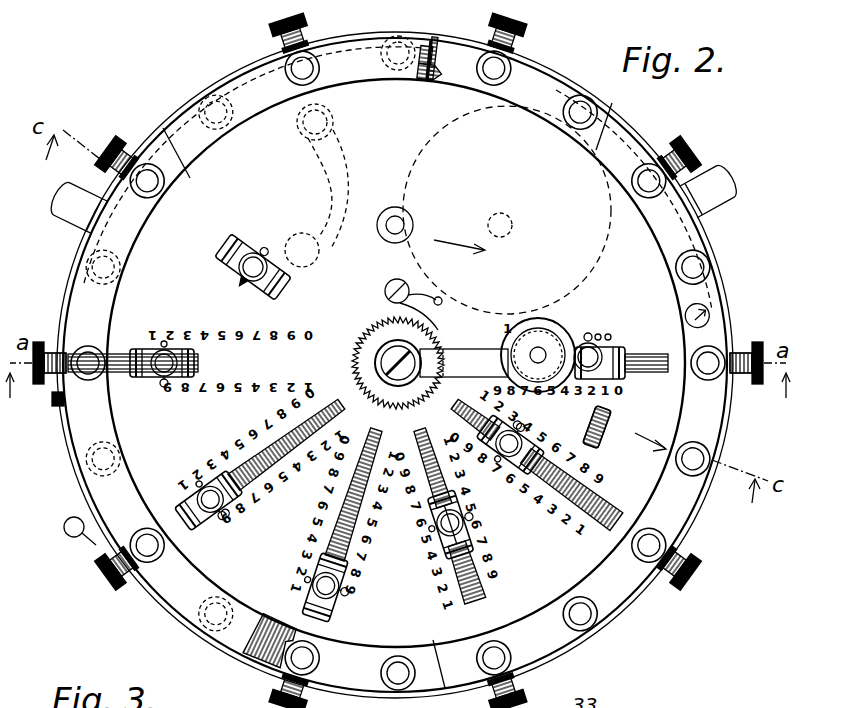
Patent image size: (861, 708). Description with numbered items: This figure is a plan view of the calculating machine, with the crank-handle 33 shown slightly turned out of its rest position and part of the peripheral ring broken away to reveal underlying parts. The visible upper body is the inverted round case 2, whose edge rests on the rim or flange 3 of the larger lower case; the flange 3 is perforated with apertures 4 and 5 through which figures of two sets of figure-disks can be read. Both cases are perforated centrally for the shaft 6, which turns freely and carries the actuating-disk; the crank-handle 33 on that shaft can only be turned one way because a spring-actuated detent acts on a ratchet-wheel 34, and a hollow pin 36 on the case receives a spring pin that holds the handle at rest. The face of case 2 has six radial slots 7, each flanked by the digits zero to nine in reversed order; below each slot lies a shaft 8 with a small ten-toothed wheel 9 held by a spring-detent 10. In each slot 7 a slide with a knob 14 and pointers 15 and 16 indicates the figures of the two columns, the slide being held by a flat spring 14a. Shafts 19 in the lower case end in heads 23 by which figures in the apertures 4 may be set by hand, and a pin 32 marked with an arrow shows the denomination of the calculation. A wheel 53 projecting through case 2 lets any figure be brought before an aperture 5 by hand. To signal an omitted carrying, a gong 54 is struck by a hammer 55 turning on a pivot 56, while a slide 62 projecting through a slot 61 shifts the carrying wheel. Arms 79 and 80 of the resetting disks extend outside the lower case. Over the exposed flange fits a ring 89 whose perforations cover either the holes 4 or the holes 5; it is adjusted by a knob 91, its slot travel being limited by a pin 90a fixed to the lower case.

The case 2 is at (395, 400).
The rim or flange 3 is at (740, 427).
The aperture 4 is at (505, 75).
The aperture 5 is at (404, 363).
The shaft 6 is at (425, 352).
The radial slot 7 is at (368, 459).
The shaft 8 is at (355, 642).
The small wheel 9 is at (459, 579).
The spring-detent 10 is at (652, 489).
The knob 14 is at (376, 458).
The flat spring 14a is at (423, 554).
The pointer 15 is at (354, 472).
The pointer 16 is at (388, 481).
The shaft 19 is at (398, 459).
The head 23 is at (420, 360).
The pin 32 is at (724, 299).
The crank-handle 33 is at (528, 335).
The spring-actuated detent and ratchet-wheel 34 is at (386, 300).
The hollow pin 36 is at (413, 222).
The wheel 53 is at (606, 425).
The gong 54 is at (600, 242).
The hammer 55 is at (303, 235).
The pivot 56 is at (328, 120).
The slot 61 is at (222, 248).
The slide 62 is at (282, 280).
The arm 79 is at (729, 193).
The arm 80 is at (70, 214).
The ring 89 is at (232, 92).
The pin 90a is at (57, 407).
The knob 91 is at (70, 537).